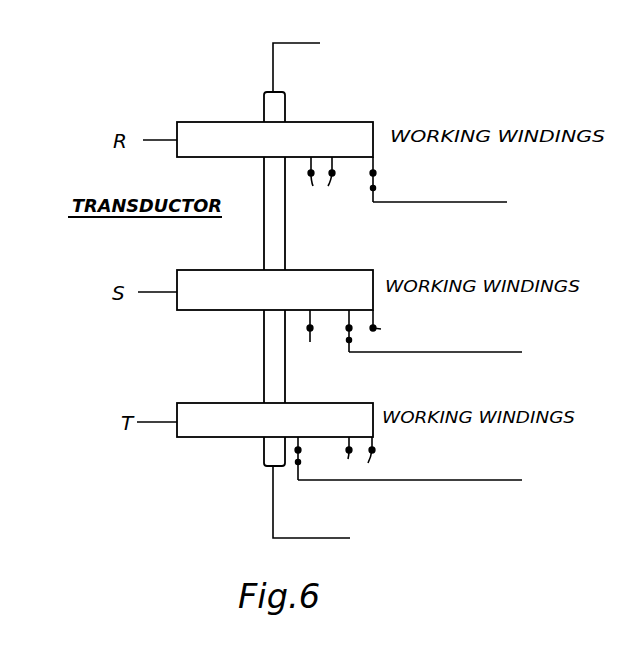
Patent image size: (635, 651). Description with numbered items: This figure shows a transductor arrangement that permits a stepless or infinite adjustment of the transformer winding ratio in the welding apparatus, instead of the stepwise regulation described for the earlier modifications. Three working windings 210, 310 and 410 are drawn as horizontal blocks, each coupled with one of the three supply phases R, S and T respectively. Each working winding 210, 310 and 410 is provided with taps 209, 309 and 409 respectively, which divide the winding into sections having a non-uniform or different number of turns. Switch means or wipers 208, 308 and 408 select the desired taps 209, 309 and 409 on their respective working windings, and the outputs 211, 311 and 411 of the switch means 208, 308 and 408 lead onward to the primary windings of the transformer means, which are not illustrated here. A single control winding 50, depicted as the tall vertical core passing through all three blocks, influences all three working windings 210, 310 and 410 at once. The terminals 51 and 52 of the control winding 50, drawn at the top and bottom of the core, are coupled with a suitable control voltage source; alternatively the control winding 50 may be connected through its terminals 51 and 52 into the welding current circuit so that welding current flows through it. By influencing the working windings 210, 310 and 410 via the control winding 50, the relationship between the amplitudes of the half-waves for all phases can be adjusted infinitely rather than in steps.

The control winding 50 is at (278, 108).
The terminal 51 is at (312, 62).
The terminal 52 is at (327, 508).
The working winding 210 is at (275, 139).
The taps 209 is at (368, 177).
The switch means 208 is at (370, 194).
The output 211 is at (466, 203).
The working winding 310 is at (275, 290).
The taps 309 is at (359, 340).
The switch means 308 is at (354, 347).
The output 311 is at (454, 353).
The working winding 410 is at (275, 420).
The taps 409 is at (373, 457).
The switch means 408 is at (313, 472).
The output 411 is at (428, 480).